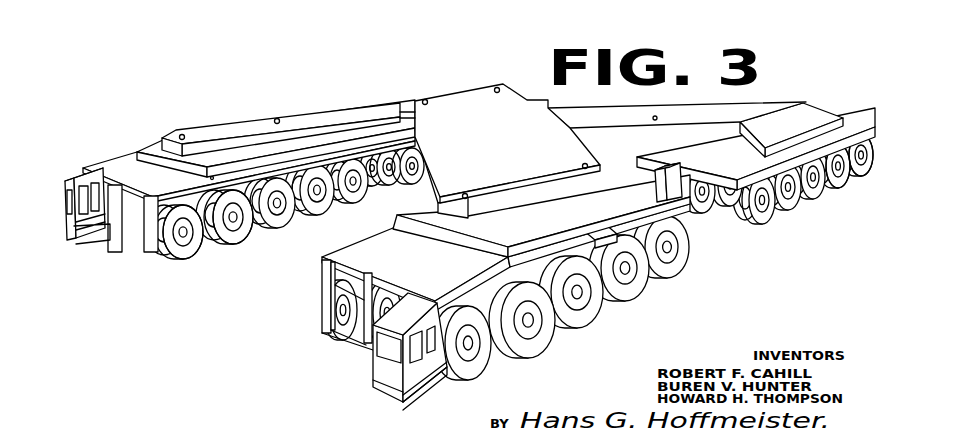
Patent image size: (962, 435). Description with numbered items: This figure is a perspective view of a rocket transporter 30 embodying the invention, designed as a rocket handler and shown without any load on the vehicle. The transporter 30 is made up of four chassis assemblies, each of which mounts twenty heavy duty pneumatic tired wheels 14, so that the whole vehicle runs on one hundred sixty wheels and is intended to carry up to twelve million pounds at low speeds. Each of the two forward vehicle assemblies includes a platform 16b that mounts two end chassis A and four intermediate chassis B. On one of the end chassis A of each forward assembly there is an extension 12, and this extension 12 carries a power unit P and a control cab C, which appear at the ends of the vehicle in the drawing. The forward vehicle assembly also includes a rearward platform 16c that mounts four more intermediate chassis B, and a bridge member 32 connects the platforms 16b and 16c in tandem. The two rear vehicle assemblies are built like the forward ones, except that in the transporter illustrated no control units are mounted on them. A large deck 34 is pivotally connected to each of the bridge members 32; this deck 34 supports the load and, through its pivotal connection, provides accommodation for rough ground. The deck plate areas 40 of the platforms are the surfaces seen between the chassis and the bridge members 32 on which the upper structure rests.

The rocket transporter 30 is at (318, 108).
The wheels 14 is at (783, 203).
The extension 12 is at (303, 287).
The platform 16b is at (476, 180).
The rearward platform 16c is at (660, 160).
The bridge member 32 is at (490, 168).
The deck 34 is at (496, 142).
The deck plate 40 is at (479, 202).
The end chassis A is at (166, 200).
The intermediate chassis B is at (531, 256).
The control cab C is at (256, 268).
The power unit P is at (258, 312).